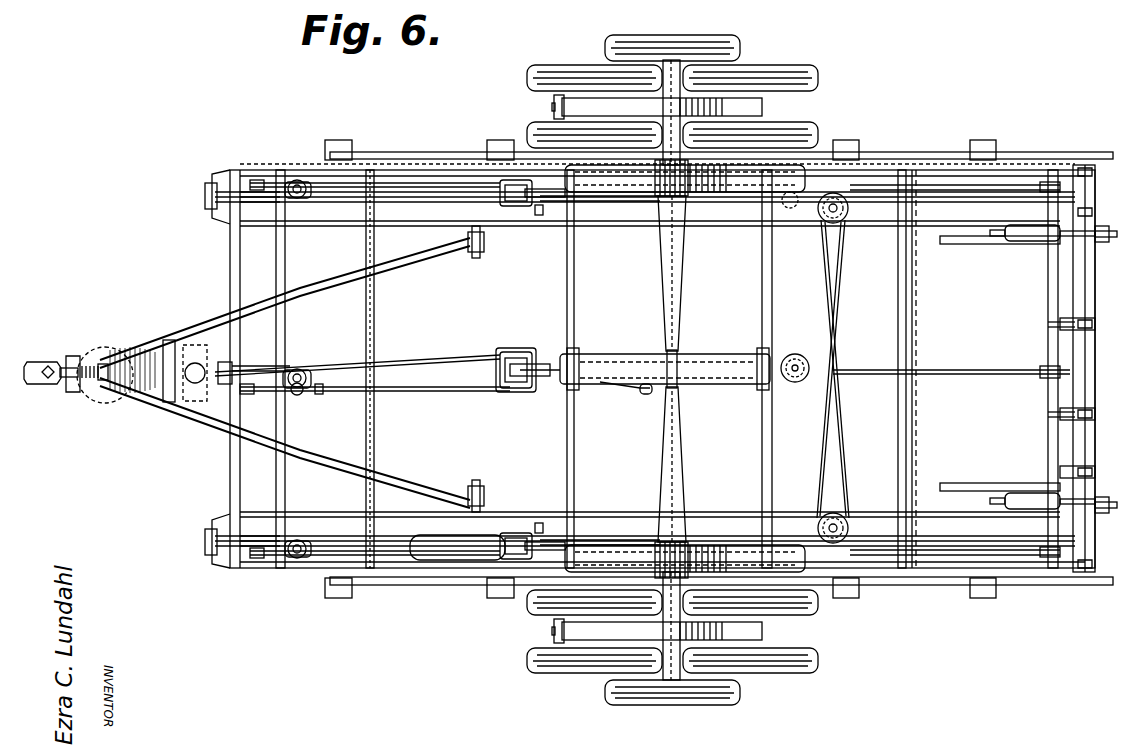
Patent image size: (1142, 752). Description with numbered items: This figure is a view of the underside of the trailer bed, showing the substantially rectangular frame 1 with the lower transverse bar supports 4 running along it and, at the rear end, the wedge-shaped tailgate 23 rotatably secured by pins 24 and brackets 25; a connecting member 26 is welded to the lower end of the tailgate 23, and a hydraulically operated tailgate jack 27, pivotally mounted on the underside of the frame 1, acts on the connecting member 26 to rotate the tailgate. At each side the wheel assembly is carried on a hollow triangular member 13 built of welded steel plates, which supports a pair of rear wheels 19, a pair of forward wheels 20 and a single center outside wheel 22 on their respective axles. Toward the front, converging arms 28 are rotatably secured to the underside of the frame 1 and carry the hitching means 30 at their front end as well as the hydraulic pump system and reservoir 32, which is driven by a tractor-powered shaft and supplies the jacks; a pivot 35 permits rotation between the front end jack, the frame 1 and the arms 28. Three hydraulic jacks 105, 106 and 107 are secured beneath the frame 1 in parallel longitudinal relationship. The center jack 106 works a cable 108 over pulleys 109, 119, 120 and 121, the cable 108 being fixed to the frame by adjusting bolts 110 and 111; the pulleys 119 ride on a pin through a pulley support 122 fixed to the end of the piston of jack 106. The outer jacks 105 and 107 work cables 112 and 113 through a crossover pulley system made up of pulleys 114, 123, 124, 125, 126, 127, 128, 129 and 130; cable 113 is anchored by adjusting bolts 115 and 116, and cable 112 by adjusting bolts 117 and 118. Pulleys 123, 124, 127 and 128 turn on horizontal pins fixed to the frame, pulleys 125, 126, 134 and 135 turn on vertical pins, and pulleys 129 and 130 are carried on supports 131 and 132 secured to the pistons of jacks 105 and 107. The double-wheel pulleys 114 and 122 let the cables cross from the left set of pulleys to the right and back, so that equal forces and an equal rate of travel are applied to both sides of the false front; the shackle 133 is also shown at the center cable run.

The frame 1 is at (228, 258).
The lower transverse bar supports 4 is at (1055, 149).
The triangular member 13 is at (772, 631).
The wheels 19 is at (785, 670).
The wheels 20 is at (560, 674).
The center outside wheel 22 is at (677, 704).
The tailgate 23 is at (1085, 378).
The pins 24 is at (1094, 322).
The brackets 25 is at (1050, 326).
The connecting member 26 is at (1103, 240).
The tailgate jack 27 is at (1032, 238).
The converging arms 28 is at (320, 276).
The hitching means 30 is at (36, 362).
The hydraulic pump system and reservoir 32 is at (127, 340).
The pivot 35 is at (472, 250).
The hydraulic jack 105 is at (618, 210).
The hydraulic jack 106 is at (613, 349).
The hydraulic jack 107 is at (612, 521).
The cable 108 is at (388, 355).
The pulley 109 is at (234, 365).
The adjusting bolt 110 is at (268, 393).
The adjusting bolt 111 is at (656, 394).
The cable 112 is at (408, 572).
The cable 113 is at (382, 165).
The pulley 114 is at (850, 211).
The adjusting bolt 115 is at (264, 172).
The adjusting bolt 116 is at (606, 203).
The adjusting bolt 117 is at (263, 570).
The adjusting bolt 118 is at (630, 558).
The pulleys 119 is at (514, 348).
The pulley 120 is at (796, 352).
The pulley 121 is at (1040, 372).
The pulley support 122 is at (498, 365).
The pulley 123 is at (1042, 549).
The pulley 124 is at (1042, 188).
The pulley 125 is at (815, 190).
The pulley 126 is at (828, 543).
The pulley 127 is at (210, 555).
The pulley 128 is at (204, 206).
The pulley 129 is at (520, 211).
The pulley 130 is at (520, 523).
The support 131 is at (500, 193).
The support 132 is at (500, 545).
The shackle 133 is at (312, 369).
The pulley 134 is at (318, 198).
The pulley 135 is at (308, 539).